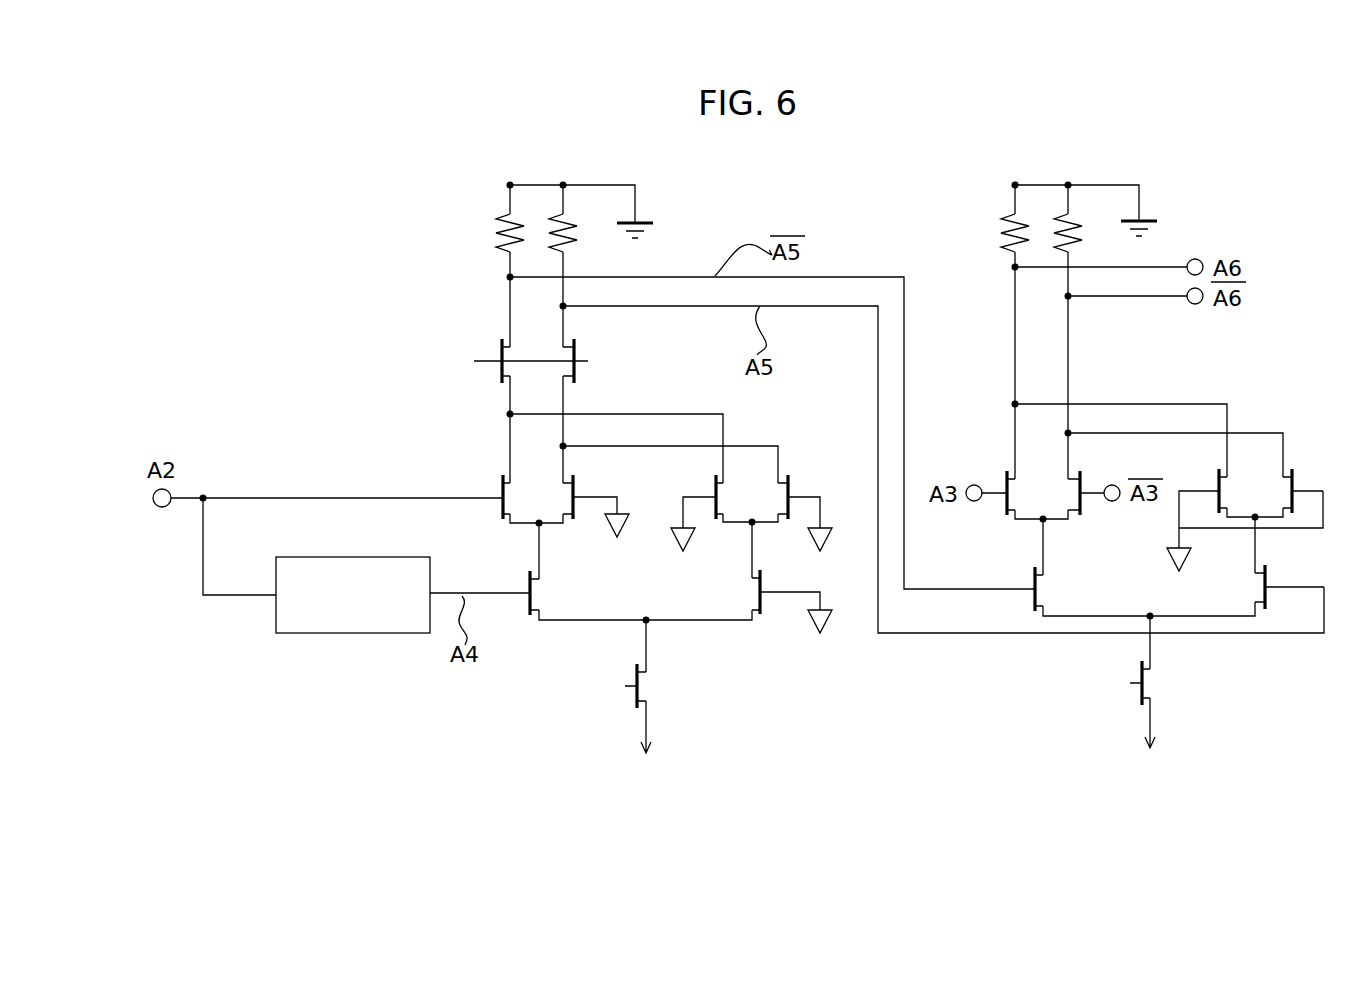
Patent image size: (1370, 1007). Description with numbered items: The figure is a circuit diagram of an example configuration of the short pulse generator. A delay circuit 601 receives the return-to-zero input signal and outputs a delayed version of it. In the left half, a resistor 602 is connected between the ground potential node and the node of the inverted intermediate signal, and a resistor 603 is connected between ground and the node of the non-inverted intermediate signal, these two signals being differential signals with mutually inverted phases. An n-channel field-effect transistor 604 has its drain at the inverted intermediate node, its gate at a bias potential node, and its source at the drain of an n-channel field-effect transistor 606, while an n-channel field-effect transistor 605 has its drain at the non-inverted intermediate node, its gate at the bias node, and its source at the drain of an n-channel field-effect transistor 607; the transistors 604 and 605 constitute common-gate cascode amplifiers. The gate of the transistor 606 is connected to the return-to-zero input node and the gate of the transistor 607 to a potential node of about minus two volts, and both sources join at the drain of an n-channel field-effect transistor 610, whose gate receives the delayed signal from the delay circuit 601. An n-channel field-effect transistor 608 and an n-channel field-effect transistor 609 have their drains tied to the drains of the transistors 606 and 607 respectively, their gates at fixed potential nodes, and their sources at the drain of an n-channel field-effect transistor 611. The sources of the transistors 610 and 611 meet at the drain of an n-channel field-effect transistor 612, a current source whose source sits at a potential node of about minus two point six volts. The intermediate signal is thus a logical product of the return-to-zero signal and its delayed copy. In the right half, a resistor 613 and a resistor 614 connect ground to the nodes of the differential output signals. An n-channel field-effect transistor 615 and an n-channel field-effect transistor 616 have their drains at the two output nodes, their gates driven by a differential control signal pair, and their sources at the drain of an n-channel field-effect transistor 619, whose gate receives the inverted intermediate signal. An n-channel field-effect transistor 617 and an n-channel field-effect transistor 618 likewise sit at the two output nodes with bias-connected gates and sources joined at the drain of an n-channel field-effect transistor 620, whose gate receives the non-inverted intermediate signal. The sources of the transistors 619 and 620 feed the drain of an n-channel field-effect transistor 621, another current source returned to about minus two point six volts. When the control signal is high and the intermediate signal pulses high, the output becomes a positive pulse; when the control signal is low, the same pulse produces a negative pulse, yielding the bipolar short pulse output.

The delay circuit 601 is at (305, 557).
The resistor 602 is at (496, 250).
The resistor 603 is at (555, 222).
The n-channel field-effect transistor 604 is at (500, 348).
The n-channel field-effect transistor 605 is at (577, 353).
The n-channel field-effect transistor 606 is at (500, 486).
The n-channel field-effect transistor 607 is at (578, 510).
The n-channel field-effect transistor 608 is at (714, 486).
The n-channel field-effect transistor 609 is at (790, 484).
The n-channel field-effect transistor 610 is at (528, 602).
The n-channel field-effect transistor 611 is at (762, 600).
The n-channel field-effect transistor 612 is at (636, 699).
The resistor 613 is at (1001, 250).
The resistor 614 is at (1060, 222).
The n-channel field-effect transistor 615 is at (1005, 480).
The n-channel field-effect transistor 616 is at (1085, 510).
The n-channel field-effect transistor 617 is at (1217, 480).
The n-channel field-effect transistor 618 is at (1294, 478).
The n-channel field-effect transistor 619 is at (1033, 582).
The n-channel field-effect transistor 620 is at (1262, 586).
The n-channel field-effect transistor 621 is at (1140, 694).